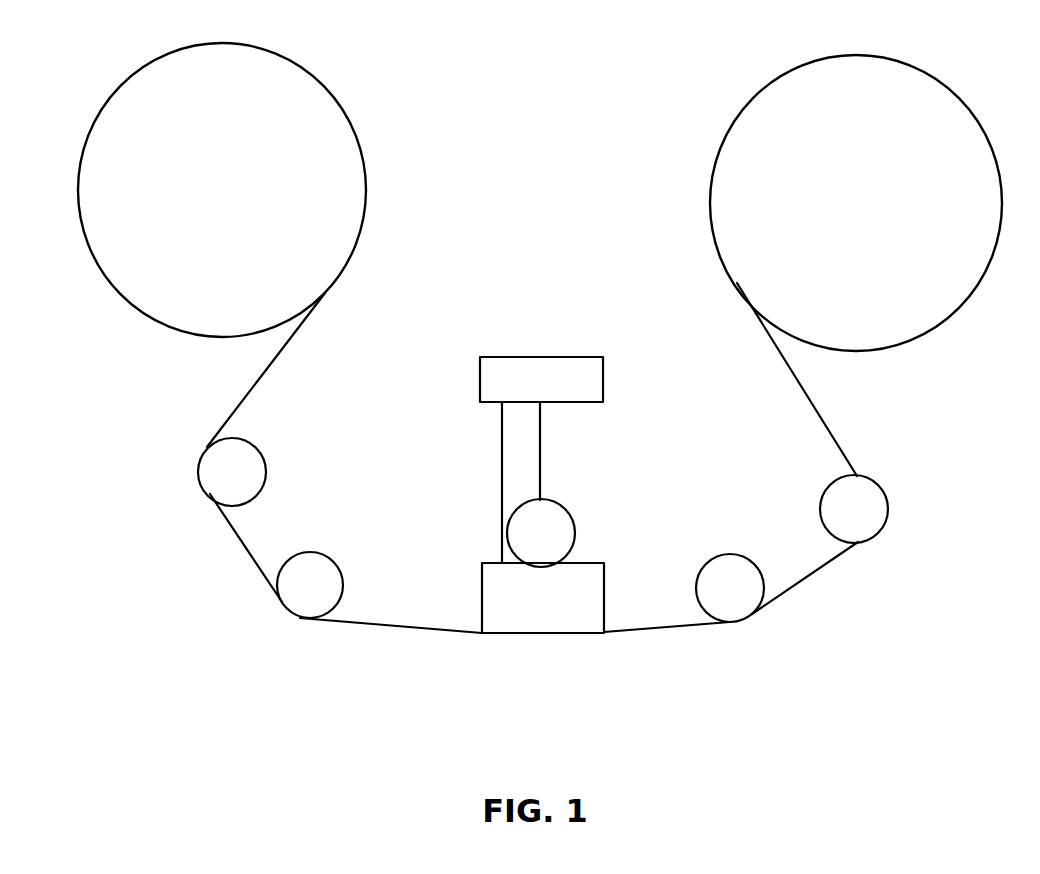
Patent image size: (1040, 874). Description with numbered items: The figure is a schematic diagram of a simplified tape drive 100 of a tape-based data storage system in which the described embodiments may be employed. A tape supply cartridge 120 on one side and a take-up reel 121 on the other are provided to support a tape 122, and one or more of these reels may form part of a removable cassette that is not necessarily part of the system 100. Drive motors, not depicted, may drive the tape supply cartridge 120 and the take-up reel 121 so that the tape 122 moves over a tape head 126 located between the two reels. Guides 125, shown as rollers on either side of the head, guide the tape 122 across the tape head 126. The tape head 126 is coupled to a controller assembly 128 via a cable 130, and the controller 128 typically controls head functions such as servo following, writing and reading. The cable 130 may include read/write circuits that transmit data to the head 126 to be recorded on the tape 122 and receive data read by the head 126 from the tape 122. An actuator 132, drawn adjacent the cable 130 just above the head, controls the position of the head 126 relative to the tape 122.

The tape drive 100 is at (175, 390).
The tape supply cartridge 120 is at (365, 158).
The take-up reel 121 is at (948, 323).
The tape 122 is at (402, 627).
The guides 125 is at (310, 552).
The tape head 126 is at (607, 597).
The controller assembly 128 is at (540, 357).
The cable 130 is at (502, 530).
The actuator 132 is at (563, 507).